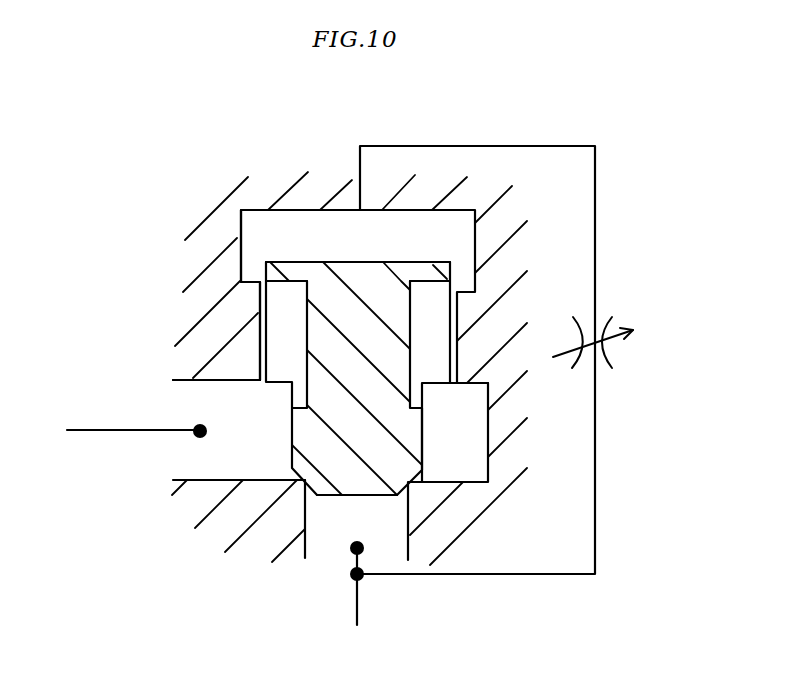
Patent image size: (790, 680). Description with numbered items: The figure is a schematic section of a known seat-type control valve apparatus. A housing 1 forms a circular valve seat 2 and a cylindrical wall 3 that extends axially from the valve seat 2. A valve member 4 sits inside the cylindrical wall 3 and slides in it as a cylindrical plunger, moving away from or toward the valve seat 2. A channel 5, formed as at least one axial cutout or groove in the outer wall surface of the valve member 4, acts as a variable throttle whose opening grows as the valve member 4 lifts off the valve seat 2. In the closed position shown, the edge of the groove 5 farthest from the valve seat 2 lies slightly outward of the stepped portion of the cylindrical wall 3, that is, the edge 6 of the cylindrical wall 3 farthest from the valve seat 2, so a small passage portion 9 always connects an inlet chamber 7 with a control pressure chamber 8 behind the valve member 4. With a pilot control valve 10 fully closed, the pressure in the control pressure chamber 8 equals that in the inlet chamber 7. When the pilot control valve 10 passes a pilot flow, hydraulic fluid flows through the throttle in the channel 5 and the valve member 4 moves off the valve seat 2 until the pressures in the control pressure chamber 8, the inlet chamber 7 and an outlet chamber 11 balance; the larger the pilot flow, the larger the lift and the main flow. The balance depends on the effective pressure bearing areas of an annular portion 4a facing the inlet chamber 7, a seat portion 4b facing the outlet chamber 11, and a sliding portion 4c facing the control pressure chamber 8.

The housing 1 is at (192, 510).
The valve seat 2 is at (302, 487).
The cylindrical wall 3 is at (240, 352).
The valve member 4 is at (313, 426).
The annular portion 4a is at (433, 387).
The seat portion 4b is at (360, 496).
The sliding portion 4c is at (353, 260).
The channel 5 is at (278, 310).
The edge of the cylindrical wall 6 is at (262, 288).
The inlet chamber 7 is at (215, 414).
The control pressure chamber 8 is at (290, 235).
The small passage portion 9 is at (240, 280).
The pilot control valve 10 is at (607, 313).
The outlet chamber 11 is at (327, 535).